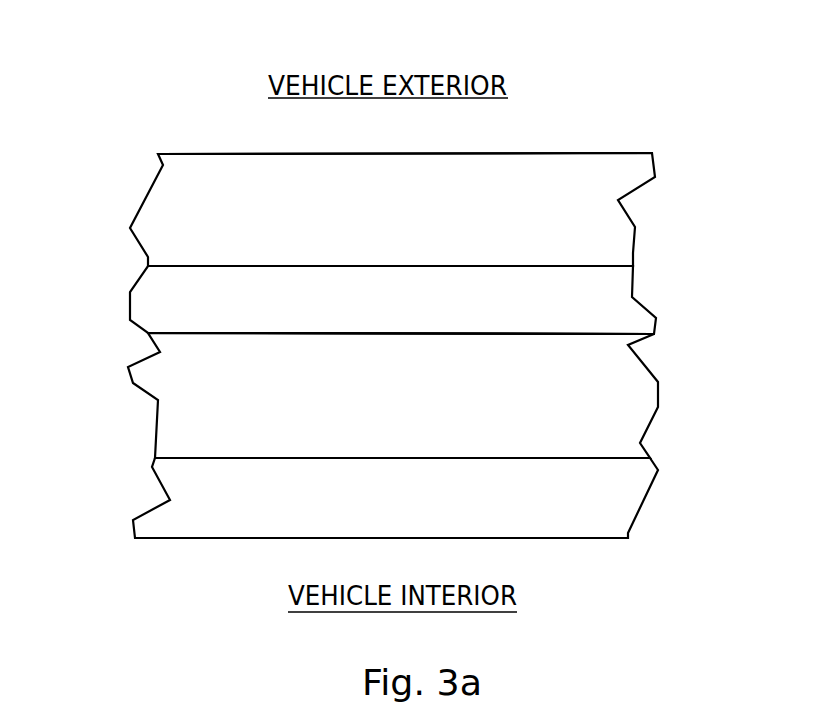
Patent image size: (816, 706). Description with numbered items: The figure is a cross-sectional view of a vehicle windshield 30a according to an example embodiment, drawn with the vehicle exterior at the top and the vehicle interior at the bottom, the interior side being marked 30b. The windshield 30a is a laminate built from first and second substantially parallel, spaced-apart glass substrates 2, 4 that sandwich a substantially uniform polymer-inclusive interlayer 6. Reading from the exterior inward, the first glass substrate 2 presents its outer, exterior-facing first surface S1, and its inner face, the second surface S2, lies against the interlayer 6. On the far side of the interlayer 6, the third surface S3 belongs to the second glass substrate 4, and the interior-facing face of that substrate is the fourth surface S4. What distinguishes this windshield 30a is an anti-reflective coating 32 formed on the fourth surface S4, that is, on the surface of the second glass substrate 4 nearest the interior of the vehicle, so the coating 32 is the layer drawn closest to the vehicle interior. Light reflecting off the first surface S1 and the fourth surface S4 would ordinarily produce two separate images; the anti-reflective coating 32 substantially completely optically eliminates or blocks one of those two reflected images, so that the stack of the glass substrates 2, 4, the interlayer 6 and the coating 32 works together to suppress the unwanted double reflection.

The vehicle windshield 30a is at (470, 269).
The windshield laminate (vehicle interior side) 30b is at (805, 703).
The first glass substrate 2 is at (630, 210).
The second glass substrate 4 is at (658, 392).
The polymer-inclusive interlayer 6 is at (630, 283).
The anti-reflective coating 32 is at (652, 490).
The first surface S1 is at (630, 153).
The second surface S2 is at (613, 264).
The third surface S3 is at (623, 332).
The fourth surface S4 is at (622, 458).